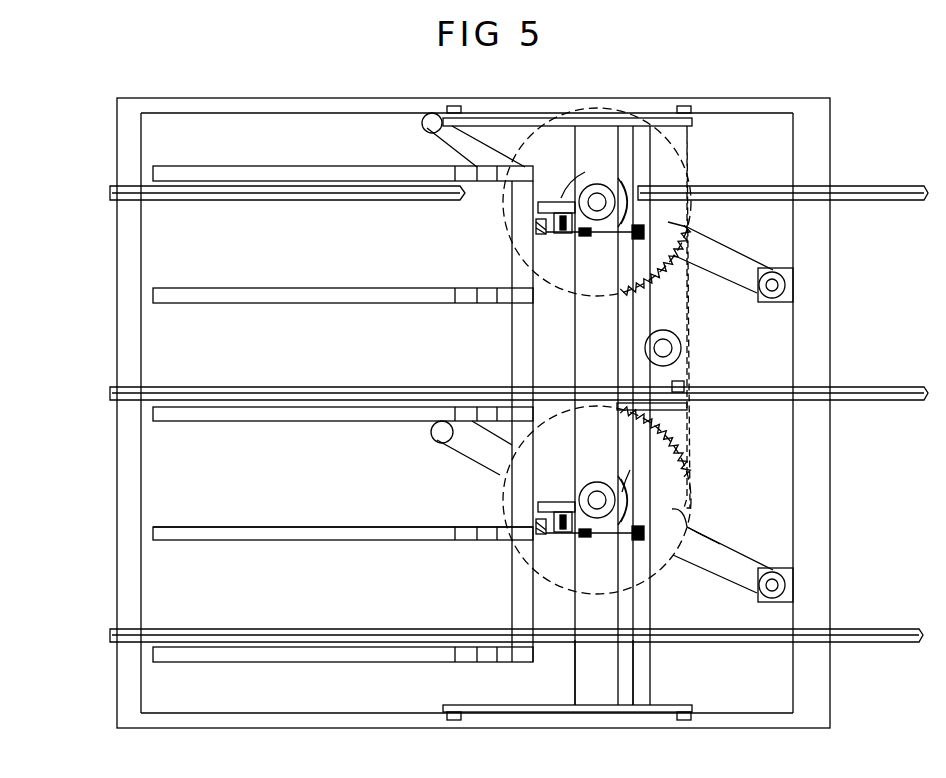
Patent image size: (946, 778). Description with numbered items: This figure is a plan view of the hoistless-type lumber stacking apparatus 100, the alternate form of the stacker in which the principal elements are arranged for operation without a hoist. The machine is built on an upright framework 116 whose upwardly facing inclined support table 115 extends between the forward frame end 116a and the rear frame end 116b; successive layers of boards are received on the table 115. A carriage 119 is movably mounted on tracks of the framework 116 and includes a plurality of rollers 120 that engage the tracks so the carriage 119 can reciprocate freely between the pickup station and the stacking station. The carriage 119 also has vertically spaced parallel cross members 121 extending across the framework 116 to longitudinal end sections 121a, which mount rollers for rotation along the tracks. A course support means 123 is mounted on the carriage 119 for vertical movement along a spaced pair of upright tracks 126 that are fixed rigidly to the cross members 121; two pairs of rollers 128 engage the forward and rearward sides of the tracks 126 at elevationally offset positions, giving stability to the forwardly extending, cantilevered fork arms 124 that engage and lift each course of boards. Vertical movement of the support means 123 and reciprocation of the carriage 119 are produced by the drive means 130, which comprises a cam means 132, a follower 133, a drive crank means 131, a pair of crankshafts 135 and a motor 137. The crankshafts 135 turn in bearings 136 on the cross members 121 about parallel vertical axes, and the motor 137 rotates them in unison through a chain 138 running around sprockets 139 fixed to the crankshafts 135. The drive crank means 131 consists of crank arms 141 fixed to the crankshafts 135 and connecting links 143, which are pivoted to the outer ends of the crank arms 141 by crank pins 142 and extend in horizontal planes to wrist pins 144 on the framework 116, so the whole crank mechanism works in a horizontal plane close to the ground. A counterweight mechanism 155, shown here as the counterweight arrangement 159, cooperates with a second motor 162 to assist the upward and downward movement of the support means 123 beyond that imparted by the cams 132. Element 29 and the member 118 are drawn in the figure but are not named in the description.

The hoistless-type lumber stacking apparatus 100 is at (744, 99).
The inclined support table 115 is at (365, 385).
The upright framework 116 is at (313, 728).
The forward frame end 116a is at (118, 722).
The rear frame end 116b is at (815, 478).
The frame end member 118 is at (118, 668).
The carriage 119 is at (572, 682).
The rollers 120 is at (452, 105).
The cross members 121 is at (598, 340).
The longitudinal end sections 121a is at (588, 122).
The course support means 123 is at (290, 524).
The fork arms 124 is at (268, 178).
The upright tracks 126 is at (540, 226).
The rollers 128 is at (556, 233).
The drive means 130 is at (692, 516).
The drive crank means 131 is at (742, 290).
The cam means 132 is at (562, 197).
The follower 133 is at (605, 181).
The crankshafts 135 is at (608, 186).
The bearings 136 is at (568, 496).
The motor 137 is at (685, 348).
The chain 138 is at (688, 178).
The sprockets 139 is at (668, 222).
The crank arms 141 is at (463, 138).
The crank pins 142 is at (427, 120).
The connecting links 143 is at (705, 547).
The wrist pins 144 is at (772, 298).
The counterweight mechanism 155 is at (633, 234).
The counterweight arrangement 159 is at (660, 683).
The second motor 162 is at (688, 386).
The vertical frame member 29 is at (510, 498).